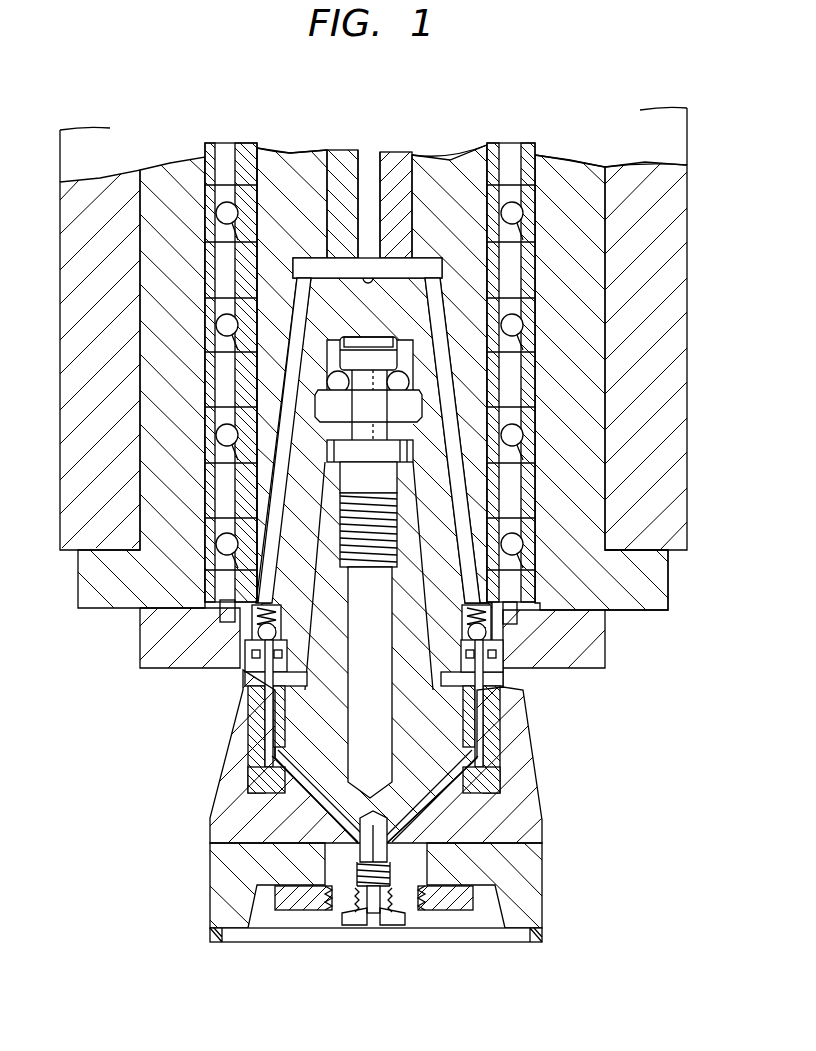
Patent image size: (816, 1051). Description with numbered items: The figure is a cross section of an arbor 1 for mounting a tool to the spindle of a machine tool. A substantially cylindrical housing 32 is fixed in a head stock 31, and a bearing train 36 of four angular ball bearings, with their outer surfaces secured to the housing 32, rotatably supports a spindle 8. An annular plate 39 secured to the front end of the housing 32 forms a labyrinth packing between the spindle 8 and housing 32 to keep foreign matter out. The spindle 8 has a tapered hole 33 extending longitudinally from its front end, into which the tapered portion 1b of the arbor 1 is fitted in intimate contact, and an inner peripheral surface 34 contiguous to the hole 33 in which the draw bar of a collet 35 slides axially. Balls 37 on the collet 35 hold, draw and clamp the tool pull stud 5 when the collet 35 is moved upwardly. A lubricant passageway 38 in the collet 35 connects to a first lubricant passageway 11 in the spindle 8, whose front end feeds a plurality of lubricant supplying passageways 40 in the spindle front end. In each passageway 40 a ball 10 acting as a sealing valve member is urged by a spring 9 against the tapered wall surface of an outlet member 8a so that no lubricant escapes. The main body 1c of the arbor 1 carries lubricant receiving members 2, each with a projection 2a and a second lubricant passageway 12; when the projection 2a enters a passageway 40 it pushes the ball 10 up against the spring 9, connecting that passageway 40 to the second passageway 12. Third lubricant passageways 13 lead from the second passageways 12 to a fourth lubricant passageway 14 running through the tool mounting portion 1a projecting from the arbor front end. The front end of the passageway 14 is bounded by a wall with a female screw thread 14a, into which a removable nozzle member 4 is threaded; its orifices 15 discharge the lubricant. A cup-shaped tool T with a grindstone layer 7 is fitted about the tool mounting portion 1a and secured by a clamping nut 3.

The arbor 1 is at (600, 796).
The tool mounting portion 1a is at (415, 908).
The tapered portion 1b is at (535, 482).
The main body 1c is at (240, 777).
The lubricant receiving member 2 is at (492, 735).
The projection 2a is at (500, 683).
The clamping nut 3 is at (467, 932).
The nozzle member 4 is at (364, 905).
The tool pull stud 5 is at (318, 235).
The grindstone layer 7 is at (214, 936).
The spindle 8 is at (466, 170).
The outlet member 8a is at (530, 670).
The spring 9 is at (502, 636).
The ball 10 is at (490, 650).
The first lubricant passageway 11 is at (433, 262).
The second lubricant passageway 12 is at (480, 760).
The third lubricant passageway 13 is at (440, 793).
The fourth lubricant passageway 14 is at (380, 908).
The female screw thread 14a is at (340, 920).
The orifices 15 is at (390, 895).
The head stock 31 is at (672, 355).
The housing 32 is at (586, 394).
The tapered hole 33 is at (230, 600).
The inner peripheral surface 34 is at (393, 240).
The collet 35 is at (352, 330).
The bearing train 36 is at (545, 326).
The balls 37 is at (416, 250).
The lubricant passageway 38 is at (368, 250).
The annular plate 39 is at (586, 613).
The lubricant supplying passageway 40 is at (248, 645).
The tool T is at (225, 862).